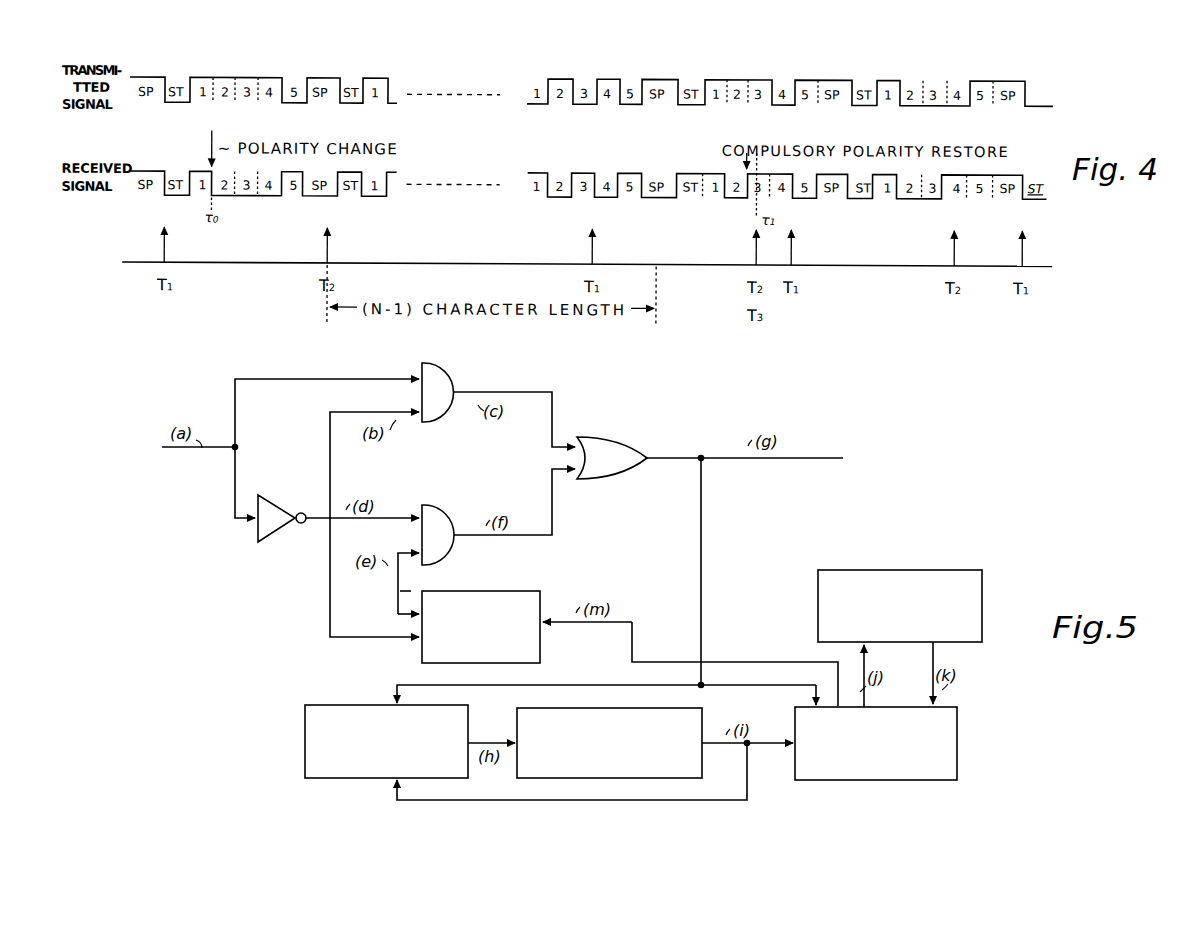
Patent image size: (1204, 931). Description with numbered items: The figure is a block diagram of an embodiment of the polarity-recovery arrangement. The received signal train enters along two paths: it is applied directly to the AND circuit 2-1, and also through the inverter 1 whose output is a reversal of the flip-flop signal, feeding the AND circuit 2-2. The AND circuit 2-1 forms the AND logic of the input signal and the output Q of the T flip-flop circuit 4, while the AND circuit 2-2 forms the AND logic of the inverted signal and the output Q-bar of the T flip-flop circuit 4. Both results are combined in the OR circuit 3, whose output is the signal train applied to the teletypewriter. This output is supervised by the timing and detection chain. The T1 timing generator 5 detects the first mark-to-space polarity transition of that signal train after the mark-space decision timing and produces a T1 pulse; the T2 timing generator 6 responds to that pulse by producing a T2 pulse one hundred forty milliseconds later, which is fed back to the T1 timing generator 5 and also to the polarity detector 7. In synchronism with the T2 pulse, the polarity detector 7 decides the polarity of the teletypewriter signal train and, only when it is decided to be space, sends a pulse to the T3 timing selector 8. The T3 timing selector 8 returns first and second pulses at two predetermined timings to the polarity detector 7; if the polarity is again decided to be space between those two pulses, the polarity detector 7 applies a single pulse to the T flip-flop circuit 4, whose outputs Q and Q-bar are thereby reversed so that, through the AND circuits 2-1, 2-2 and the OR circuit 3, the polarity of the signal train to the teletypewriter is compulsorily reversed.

The inverter 1 is at (291, 502).
The AND circuit 2-1 is at (455, 377).
The AND circuit 2-2 is at (455, 516).
The OR circuit 3 is at (622, 436).
The T flip-flop circuit 4 is at (524, 590).
The T1 timing generator 5 is at (304, 704).
The T2 timing generator 6 is at (520, 708).
The polarity detector 7 is at (958, 728).
The T3 timing selector 8 is at (957, 570).